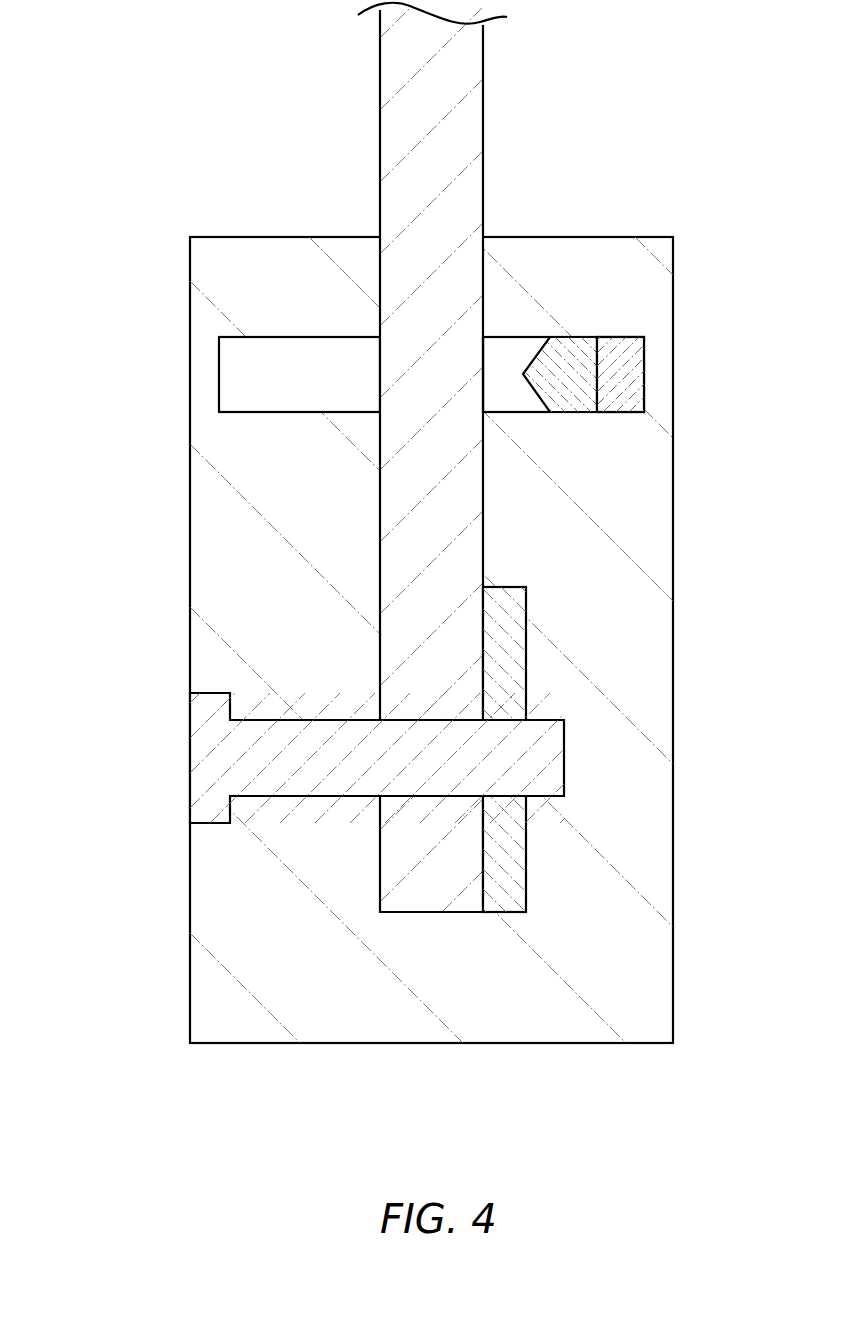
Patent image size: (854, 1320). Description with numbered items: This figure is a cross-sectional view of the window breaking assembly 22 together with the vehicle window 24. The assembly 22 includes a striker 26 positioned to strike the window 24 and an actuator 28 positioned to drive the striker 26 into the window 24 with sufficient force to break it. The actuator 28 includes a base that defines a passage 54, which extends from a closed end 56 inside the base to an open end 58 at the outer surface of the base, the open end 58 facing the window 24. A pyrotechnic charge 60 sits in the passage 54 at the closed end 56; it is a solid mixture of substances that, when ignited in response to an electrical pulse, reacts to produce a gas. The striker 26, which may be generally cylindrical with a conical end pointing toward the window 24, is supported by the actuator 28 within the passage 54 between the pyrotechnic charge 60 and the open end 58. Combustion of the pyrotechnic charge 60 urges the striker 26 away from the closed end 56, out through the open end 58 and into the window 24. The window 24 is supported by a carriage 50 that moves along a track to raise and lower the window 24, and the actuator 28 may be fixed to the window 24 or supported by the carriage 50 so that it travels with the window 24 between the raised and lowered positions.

The window breaking assembly 22 is at (128, 267).
The window 24 is at (380, 121).
The striker 26 is at (572, 392).
The actuator 28 is at (600, 228).
The carriage 50 is at (502, 840).
The passage 54 is at (510, 395).
The closed end 56 is at (647, 357).
The open end 58 is at (486, 360).
The pyrotechnic charge 60 is at (622, 378).